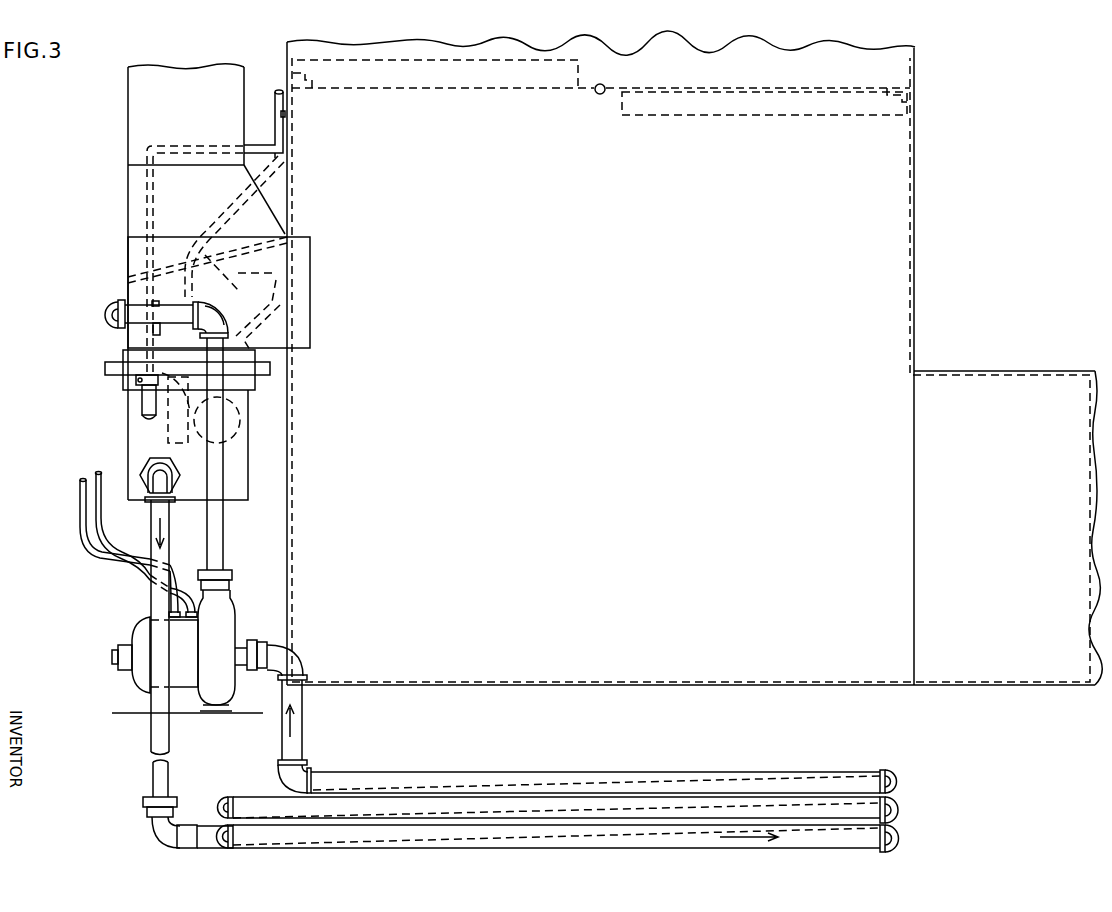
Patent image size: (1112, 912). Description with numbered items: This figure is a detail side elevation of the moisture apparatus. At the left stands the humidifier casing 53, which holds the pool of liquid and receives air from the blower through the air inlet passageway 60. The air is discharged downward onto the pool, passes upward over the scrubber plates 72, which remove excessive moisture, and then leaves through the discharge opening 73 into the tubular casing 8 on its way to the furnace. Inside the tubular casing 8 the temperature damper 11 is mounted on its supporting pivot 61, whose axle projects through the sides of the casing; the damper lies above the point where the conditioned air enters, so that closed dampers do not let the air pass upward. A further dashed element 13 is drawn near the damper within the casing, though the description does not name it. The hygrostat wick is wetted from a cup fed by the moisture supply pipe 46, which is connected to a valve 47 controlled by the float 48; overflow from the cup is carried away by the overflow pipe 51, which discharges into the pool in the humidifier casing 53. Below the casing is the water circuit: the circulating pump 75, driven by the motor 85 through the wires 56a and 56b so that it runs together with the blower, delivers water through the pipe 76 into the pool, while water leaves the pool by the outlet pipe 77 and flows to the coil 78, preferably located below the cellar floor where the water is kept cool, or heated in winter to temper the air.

The tubular casing 8 is at (914, 253).
The temperature damper 11 is at (677, 86).
The duct 13 is at (762, 117).
The moisture supply pipe 46 is at (258, 145).
The valve 47 is at (128, 400).
The float 48 is at (237, 430).
The overflow pipe 51 is at (279, 91).
The humidifier casing 53 is at (127, 283).
The wire 56a is at (80, 512).
The wire 56b is at (101, 512).
The air inlet passageway 60 is at (128, 135).
The supporting pivot 61 is at (596, 95).
The scrubber plates 72 is at (264, 306).
The discharge opening 73 is at (310, 253).
The circulating pump 75 is at (228, 627).
The pipe 76 is at (222, 548).
The outlet pipe 77 is at (170, 740).
The coil 78 is at (495, 777).
The motor 85 is at (132, 630).